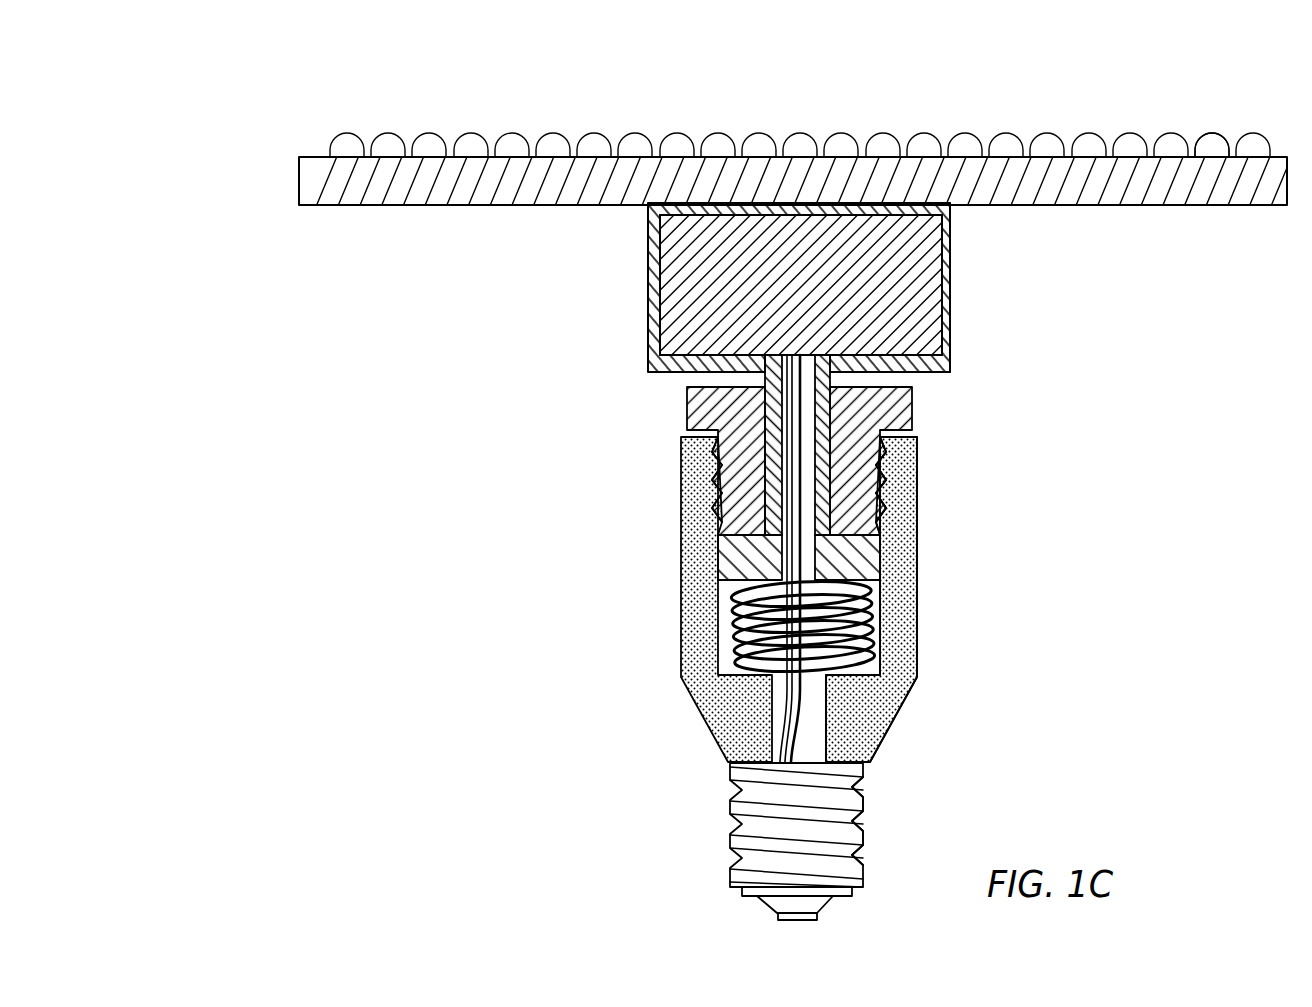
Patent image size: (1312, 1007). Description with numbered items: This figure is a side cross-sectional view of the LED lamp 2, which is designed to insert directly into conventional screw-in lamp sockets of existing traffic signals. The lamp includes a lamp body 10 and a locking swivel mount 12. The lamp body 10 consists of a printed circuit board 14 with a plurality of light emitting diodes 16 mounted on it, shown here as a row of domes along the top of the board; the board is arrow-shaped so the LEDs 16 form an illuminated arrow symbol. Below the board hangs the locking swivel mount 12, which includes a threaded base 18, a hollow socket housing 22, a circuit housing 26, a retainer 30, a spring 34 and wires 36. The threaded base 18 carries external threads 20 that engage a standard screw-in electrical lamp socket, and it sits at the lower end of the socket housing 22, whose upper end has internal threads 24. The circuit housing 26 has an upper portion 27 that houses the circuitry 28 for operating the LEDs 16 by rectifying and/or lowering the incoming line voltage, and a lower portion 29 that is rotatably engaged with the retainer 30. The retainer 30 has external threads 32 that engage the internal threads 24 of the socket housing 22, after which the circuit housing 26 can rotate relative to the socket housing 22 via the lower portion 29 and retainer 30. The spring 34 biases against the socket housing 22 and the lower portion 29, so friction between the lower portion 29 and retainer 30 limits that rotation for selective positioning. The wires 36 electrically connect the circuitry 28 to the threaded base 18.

The LED lamp 2 is at (990, 100).
The lamp body 10 is at (272, 182).
The locking swivel mount 12 is at (487, 553).
The printed circuit board 14 is at (483, 206).
The light emitting diodes 16 is at (1197, 123).
The threaded base 18 is at (708, 812).
The external threads 20 is at (866, 830).
The hollow socket housing 22 is at (895, 710).
The internal threads 24 is at (885, 497).
The circuit housing 26 is at (648, 296).
The upper portion 27 is at (951, 316).
The circuitry 28 is at (810, 298).
The lower portion 29 is at (862, 557).
The retainer 30 is at (912, 403).
The external threads 32 is at (885, 468).
The spring 34 is at (876, 623).
The wires 36 is at (790, 731).